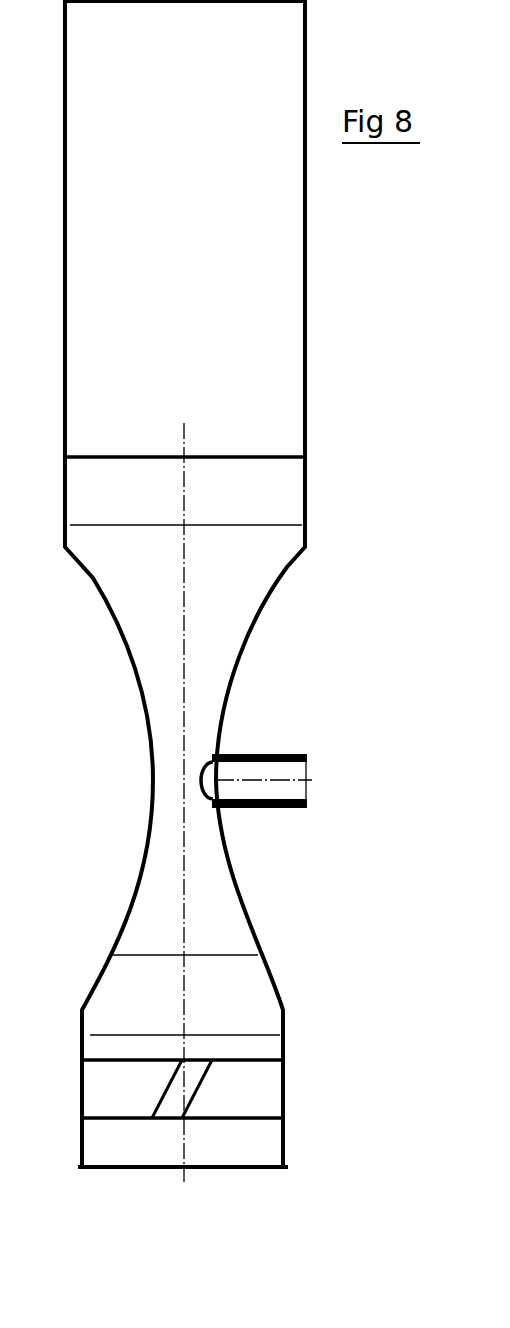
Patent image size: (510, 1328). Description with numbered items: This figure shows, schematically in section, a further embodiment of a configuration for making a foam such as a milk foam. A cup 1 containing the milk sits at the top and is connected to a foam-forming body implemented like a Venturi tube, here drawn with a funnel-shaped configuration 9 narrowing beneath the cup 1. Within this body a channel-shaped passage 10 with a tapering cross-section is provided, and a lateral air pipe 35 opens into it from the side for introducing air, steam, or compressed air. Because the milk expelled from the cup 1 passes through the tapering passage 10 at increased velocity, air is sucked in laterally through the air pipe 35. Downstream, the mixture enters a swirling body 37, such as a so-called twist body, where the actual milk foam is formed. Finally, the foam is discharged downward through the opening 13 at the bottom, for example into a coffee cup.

The cup 1 is at (306, 298).
The funnel-shaped configuration 9 is at (259, 620).
The channel-shaped passage 10 is at (187, 757).
The lateral air pipe 35 is at (296, 787).
The swirling body 37 is at (258, 1080).
The opening 13 is at (226, 1170).